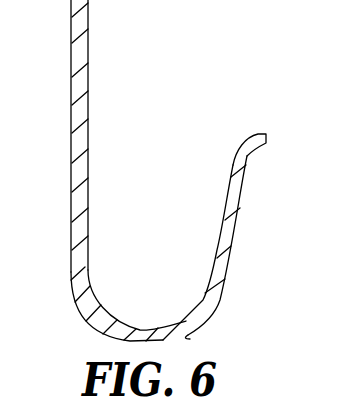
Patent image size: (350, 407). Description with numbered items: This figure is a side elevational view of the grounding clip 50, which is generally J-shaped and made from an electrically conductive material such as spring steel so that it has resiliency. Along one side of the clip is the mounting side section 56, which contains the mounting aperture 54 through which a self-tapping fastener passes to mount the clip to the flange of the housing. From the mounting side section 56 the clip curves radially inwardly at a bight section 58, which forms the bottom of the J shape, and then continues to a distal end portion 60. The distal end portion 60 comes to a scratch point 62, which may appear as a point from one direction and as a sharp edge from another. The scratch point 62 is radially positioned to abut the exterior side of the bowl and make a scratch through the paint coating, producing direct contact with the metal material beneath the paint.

The grounding clip 50 is at (174, 170).
The mounting aperture 54 is at (84, 148).
The mounting side section 56 is at (78, 19).
The bight section 58 is at (190, 339).
The distal end portion 60 is at (243, 237).
The scratch point 62 is at (267, 142).